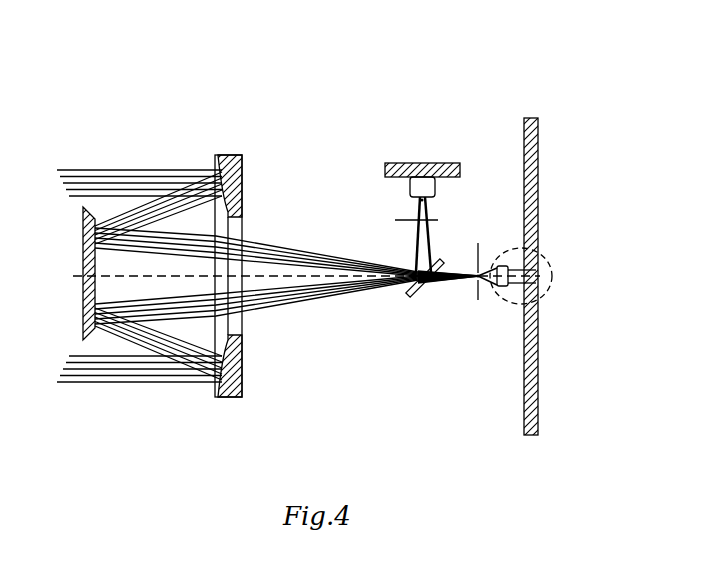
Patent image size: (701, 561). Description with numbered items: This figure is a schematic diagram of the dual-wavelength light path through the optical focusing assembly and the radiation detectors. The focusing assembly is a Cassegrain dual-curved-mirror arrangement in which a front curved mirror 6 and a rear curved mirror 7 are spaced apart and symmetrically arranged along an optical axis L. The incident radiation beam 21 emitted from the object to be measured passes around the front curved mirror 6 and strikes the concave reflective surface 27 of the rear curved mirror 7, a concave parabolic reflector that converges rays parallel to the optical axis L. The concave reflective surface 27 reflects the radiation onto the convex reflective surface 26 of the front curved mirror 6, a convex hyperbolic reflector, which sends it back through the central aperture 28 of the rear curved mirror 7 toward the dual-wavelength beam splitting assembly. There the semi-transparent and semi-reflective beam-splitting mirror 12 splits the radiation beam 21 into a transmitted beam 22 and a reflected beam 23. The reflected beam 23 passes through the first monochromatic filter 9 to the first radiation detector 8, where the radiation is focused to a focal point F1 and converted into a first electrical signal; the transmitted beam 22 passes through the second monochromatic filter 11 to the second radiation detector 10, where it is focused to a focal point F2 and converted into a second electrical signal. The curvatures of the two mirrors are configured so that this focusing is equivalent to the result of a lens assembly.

The radiation beam 21 is at (132, 158).
The rear curved mirror 7 is at (242, 192).
The central aperture 28 is at (242, 324).
The concave reflective surface 27 is at (158, 276).
The convex reflective surface 26 is at (96, 292).
The front curved mirror 6 is at (82, 308).
The optical axis L is at (82, 275).
The first radiation detector 8 is at (466, 163).
The focal point F1 is at (412, 201).
The first monochromatic filter 9 is at (438, 221).
The reflected beam 23 is at (408, 256).
The semi-transparent and semi-reflective beam-splitting mirror 12 is at (424, 292).
The transmitted beam 22 is at (449, 290).
The focal point F2 is at (490, 251).
The second monochromatic filter 11 is at (478, 302).
The second radiation detector 10 is at (538, 253).